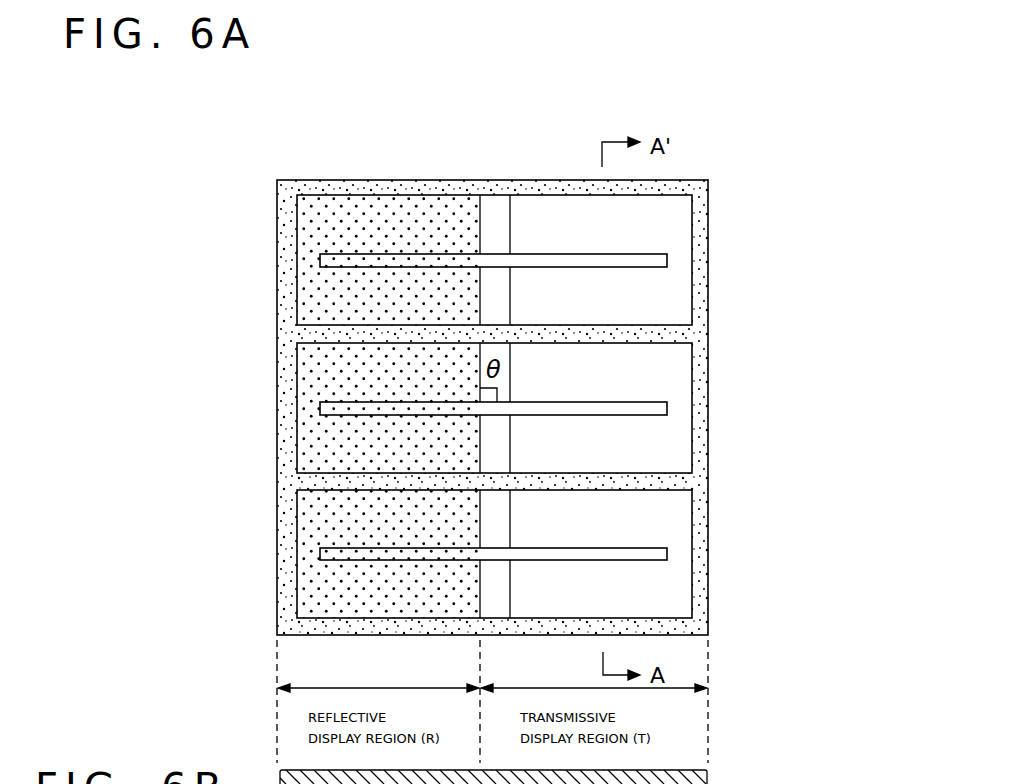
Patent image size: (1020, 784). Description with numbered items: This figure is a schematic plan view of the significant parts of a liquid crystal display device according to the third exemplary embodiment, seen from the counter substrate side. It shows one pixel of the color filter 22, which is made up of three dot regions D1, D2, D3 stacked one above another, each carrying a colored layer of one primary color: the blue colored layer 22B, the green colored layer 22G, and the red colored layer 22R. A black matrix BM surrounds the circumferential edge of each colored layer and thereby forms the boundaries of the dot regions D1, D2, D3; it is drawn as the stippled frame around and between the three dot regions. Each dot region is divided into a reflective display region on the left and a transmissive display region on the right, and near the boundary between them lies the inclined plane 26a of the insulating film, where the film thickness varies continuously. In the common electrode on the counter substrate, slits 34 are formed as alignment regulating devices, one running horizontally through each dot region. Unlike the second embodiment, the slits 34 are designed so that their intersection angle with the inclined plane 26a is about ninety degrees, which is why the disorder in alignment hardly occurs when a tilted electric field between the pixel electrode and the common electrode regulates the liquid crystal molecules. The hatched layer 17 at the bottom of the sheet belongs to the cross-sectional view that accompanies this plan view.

In FIG. 6A, the color filter 22 is at (709, 206).
In FIG. 6A, the blue colored layer 22B is at (683, 244).
In FIG. 6A, the green colored layer 22G is at (683, 371).
In FIG. 6A, the red colored layer 22R is at (683, 516).
In FIG. 6A, the inclined plane 26a is at (500, 192).
In FIG. 6A, the slits 34 is at (668, 261).
In FIG. 6A, the black matrix BM is at (283, 483).
In FIG. 6A, the dot region D1 is at (497, 260).
In FIG. 6A, the dot region D2 is at (503, 408).
In FIG. 6A, the dot region D3 is at (506, 554).
In FIG. 6B, the substrate 17 is at (707, 773).